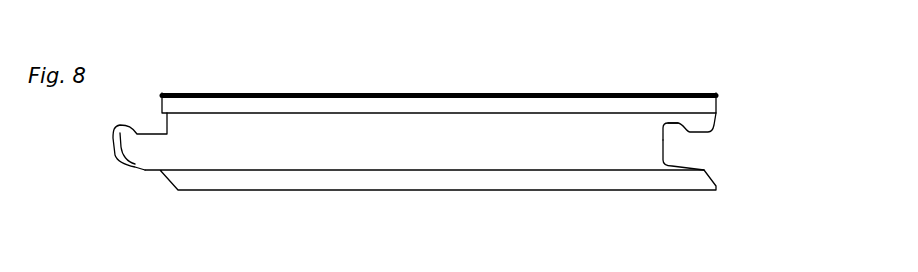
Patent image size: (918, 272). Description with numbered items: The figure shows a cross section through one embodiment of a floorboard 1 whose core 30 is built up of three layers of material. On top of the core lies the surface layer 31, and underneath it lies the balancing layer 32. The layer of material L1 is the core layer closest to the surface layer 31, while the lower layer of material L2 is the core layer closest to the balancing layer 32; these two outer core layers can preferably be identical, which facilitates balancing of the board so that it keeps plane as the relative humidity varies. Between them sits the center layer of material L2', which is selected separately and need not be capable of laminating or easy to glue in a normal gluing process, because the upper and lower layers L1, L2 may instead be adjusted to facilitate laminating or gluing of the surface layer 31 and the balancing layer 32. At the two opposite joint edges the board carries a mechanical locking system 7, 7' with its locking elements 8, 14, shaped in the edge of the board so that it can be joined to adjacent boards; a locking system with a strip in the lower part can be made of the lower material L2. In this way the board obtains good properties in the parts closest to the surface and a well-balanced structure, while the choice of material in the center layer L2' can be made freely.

The floorboard 1 is at (274, 63).
The surface layer 31 is at (565, 92).
The upper layer of material L1 is at (193, 105).
The locking system 7 is at (98, 141).
The locking element 8 is at (137, 166).
The balancing layer 32 is at (409, 191).
The core 30 is at (731, 107).
The locking element 14 is at (673, 123).
The locking system 7' is at (743, 155).
The center layer of material L2' is at (557, 209).
The lower layer of material L2 is at (627, 224).